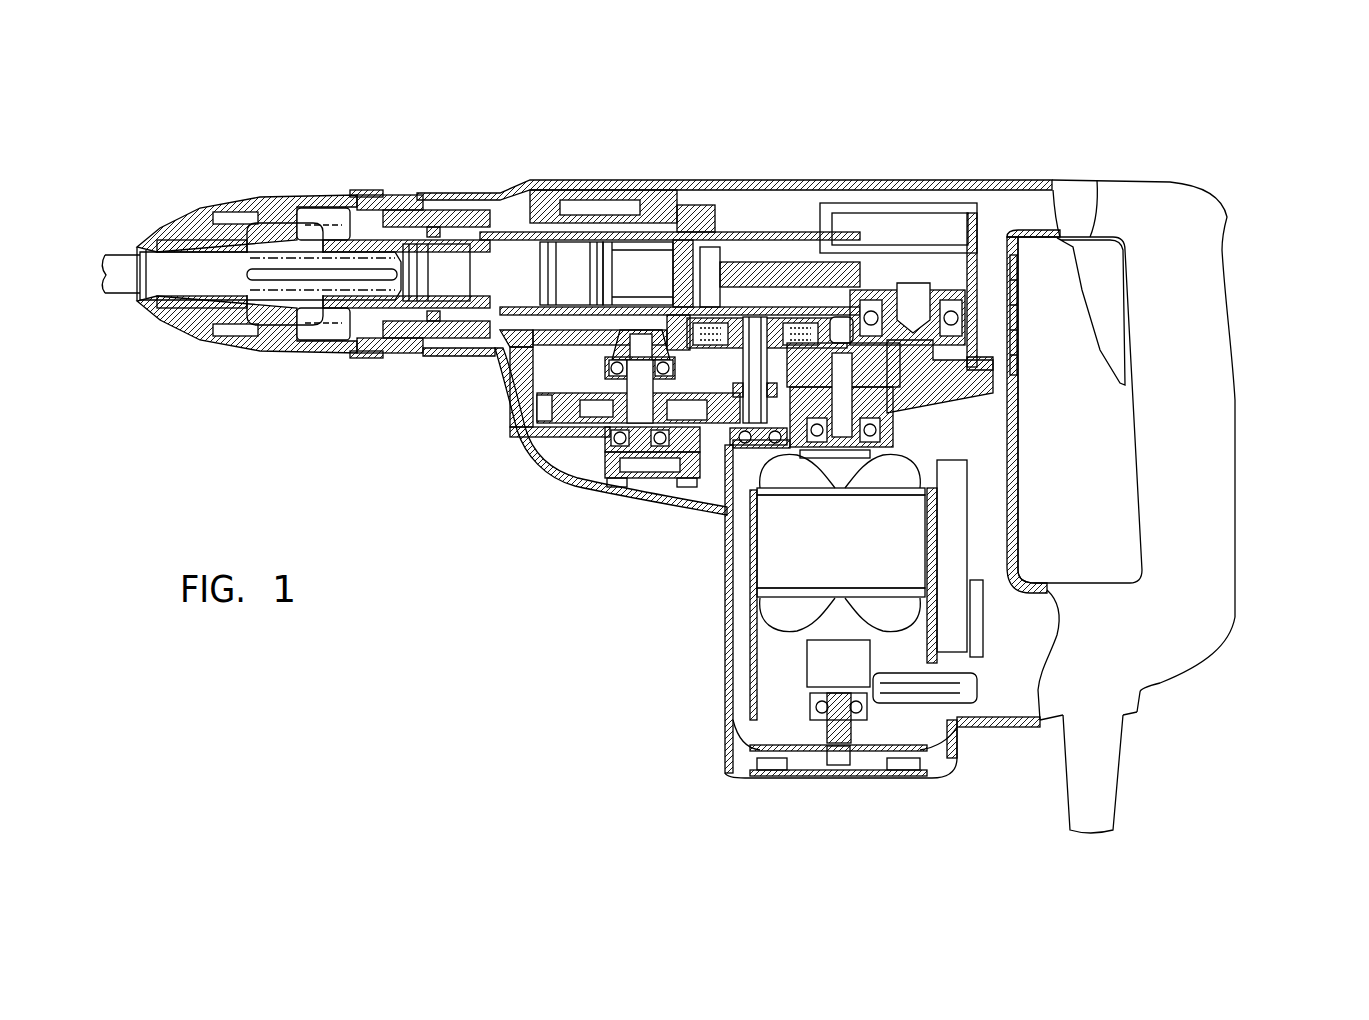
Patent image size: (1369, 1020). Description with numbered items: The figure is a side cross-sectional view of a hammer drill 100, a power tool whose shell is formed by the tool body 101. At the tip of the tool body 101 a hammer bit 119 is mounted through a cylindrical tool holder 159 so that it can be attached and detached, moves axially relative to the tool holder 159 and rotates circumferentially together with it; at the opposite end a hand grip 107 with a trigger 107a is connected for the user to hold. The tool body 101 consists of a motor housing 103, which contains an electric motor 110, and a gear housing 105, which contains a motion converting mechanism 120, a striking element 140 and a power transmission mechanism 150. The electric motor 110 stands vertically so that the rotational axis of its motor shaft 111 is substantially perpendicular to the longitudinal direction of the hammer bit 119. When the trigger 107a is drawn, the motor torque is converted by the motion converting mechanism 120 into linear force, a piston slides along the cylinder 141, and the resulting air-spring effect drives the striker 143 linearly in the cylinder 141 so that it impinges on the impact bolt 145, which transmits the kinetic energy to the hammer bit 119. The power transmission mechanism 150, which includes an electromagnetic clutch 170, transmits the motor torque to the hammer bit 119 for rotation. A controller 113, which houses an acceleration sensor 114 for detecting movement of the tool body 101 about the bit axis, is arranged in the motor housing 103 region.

The hammer drill 100 is at (1200, 143).
The tool body 101 is at (864, 176).
The motor housing 103 is at (722, 571).
The gear housing 105 is at (710, 222).
The hand grip 107 is at (1231, 285).
The trigger 107a is at (1088, 245).
The electric motor 110 is at (767, 583).
The motor shaft 111 is at (890, 428).
The controller 113 is at (960, 527).
The acceleration sensor 114 is at (980, 630).
The hammer bit 119 is at (114, 250).
The motion converting mechanism 120 is at (913, 278).
The striking element 140 is at (528, 243).
The cylinder 141 is at (636, 237).
The striker 143 is at (577, 245).
The impact bolt 145 is at (456, 248).
The power transmission mechanism 150 is at (556, 425).
The tool holder 159 is at (374, 195).
The electromagnetic clutch 170 is at (793, 326).